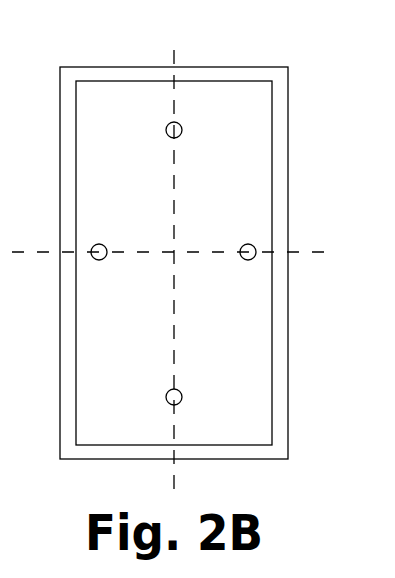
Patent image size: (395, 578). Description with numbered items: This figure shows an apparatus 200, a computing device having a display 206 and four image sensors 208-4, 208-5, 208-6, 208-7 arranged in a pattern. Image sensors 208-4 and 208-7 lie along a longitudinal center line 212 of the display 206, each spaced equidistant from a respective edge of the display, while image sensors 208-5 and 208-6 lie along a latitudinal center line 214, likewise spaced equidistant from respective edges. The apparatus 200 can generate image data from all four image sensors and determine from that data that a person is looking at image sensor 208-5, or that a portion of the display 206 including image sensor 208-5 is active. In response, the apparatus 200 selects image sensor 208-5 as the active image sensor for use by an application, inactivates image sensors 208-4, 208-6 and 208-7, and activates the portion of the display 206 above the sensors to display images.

The apparatus 200 is at (273, 66).
The display 206 is at (272, 110).
The longitudinal center line 212 is at (174, 35).
The latitudinal center line 214 is at (37, 250).
The image sensor 208-4 is at (182, 130).
The image sensor 208-5 is at (105, 258).
The image sensor 208-6 is at (242, 258).
The image sensor 208-7 is at (182, 397).